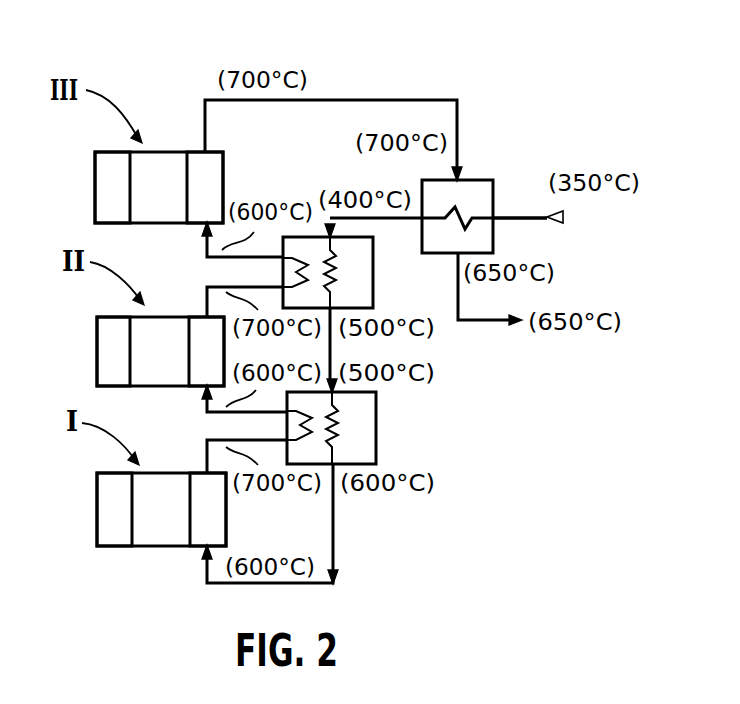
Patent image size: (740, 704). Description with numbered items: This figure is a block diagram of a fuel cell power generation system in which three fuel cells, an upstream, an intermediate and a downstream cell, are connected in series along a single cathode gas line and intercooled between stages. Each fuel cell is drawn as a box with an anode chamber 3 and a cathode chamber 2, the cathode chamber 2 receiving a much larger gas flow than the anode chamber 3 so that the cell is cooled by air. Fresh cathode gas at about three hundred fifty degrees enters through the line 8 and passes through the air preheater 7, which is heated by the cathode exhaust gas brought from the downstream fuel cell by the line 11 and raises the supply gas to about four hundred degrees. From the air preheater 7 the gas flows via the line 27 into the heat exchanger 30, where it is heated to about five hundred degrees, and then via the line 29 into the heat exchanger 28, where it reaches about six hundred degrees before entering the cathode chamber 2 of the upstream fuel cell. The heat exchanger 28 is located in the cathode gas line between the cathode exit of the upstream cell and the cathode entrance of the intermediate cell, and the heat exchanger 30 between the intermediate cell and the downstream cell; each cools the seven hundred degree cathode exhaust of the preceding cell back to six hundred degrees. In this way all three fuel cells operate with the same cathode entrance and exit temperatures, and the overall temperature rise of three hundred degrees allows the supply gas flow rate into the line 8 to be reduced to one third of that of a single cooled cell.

The cathode chamber 2 is at (202, 168).
The anode chamber 3 is at (112, 188).
The air preheater 7 is at (470, 180).
The line 8 is at (515, 218).
The line 11 is at (365, 100).
The line 27 is at (207, 416).
The heat exchanger 28 is at (376, 420).
The line 29 is at (207, 250).
The heat exchanger 30 is at (374, 276).